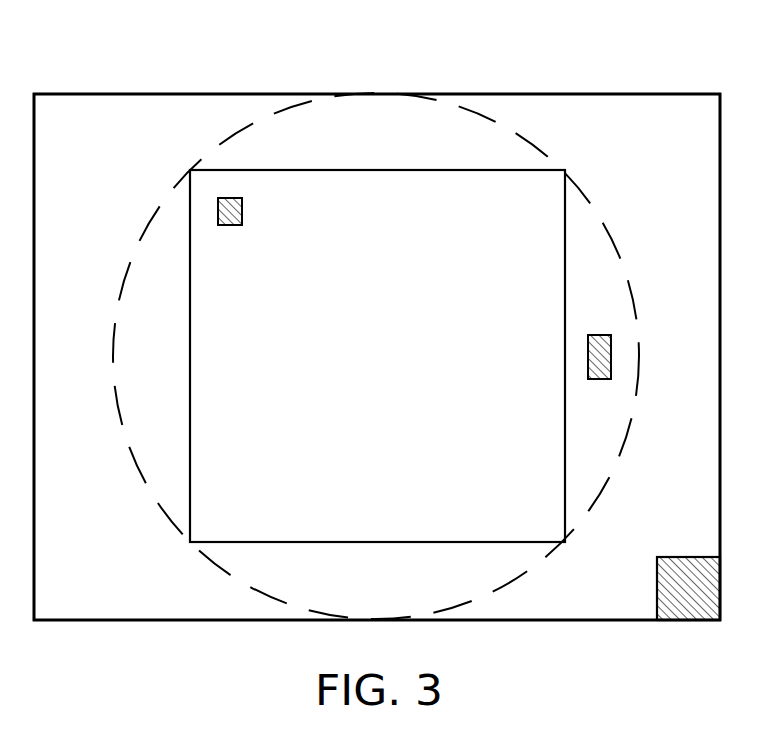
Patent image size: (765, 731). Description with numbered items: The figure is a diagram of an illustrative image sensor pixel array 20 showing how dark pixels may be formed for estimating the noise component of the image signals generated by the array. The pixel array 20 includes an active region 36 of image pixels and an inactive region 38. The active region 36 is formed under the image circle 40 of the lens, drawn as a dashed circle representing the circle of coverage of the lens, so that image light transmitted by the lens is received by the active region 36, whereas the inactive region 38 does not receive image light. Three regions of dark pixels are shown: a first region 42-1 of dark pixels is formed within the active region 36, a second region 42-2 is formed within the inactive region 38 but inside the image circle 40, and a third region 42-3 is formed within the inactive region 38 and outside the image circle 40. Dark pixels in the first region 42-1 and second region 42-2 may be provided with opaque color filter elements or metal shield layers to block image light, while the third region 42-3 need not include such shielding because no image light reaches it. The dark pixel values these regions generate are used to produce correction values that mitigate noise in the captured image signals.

The pixel array 20 is at (92, 56).
The inactive region 38 is at (610, 103).
The image circle 40 is at (213, 147).
The active region 36 is at (405, 168).
The first region of dark pixels 42-1 is at (235, 208).
The second region of dark pixels 42-2 is at (600, 357).
The third region of dark pixels 42-3 is at (683, 607).